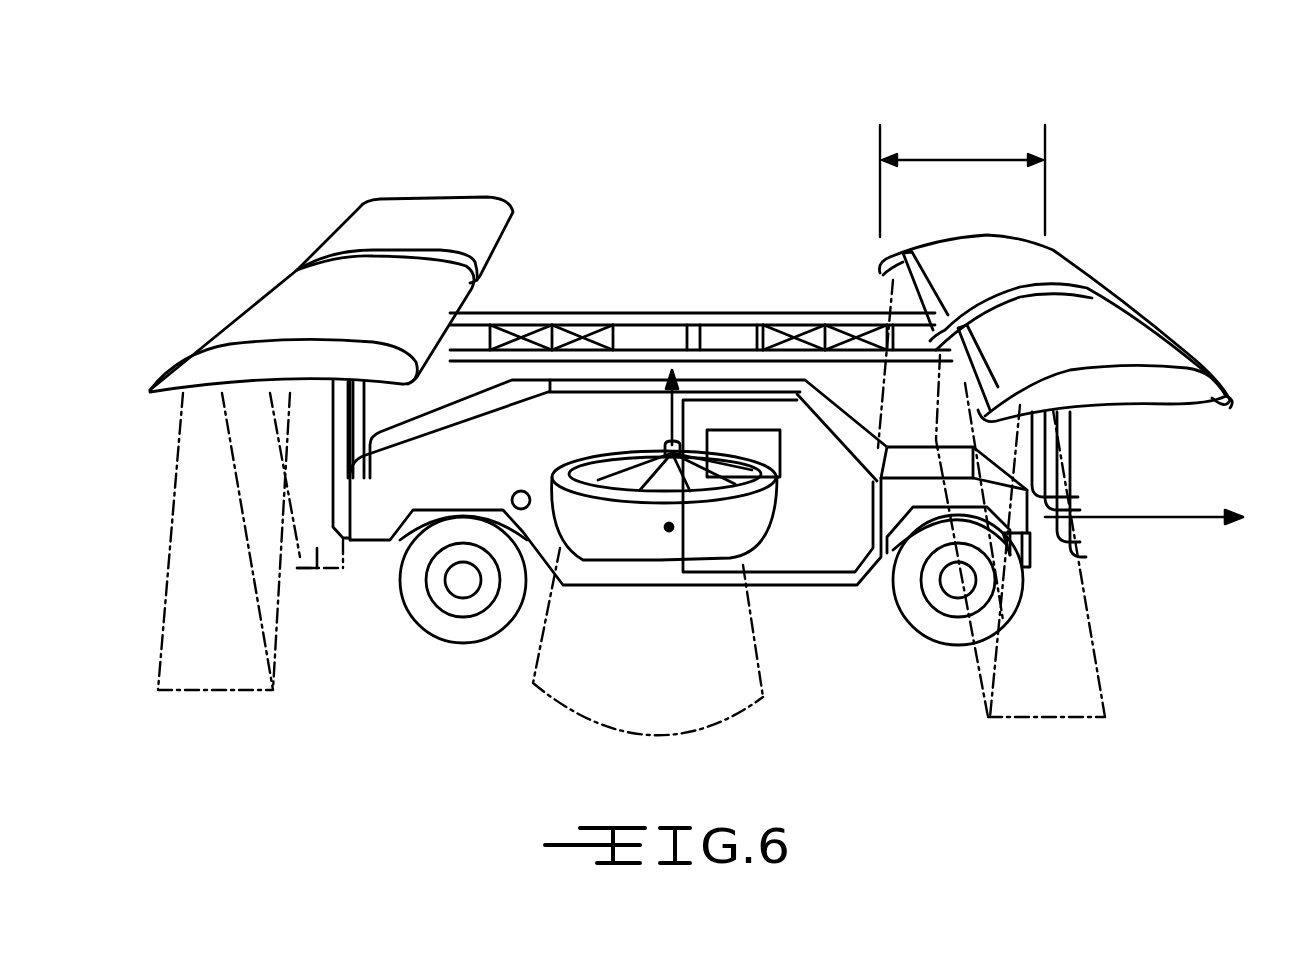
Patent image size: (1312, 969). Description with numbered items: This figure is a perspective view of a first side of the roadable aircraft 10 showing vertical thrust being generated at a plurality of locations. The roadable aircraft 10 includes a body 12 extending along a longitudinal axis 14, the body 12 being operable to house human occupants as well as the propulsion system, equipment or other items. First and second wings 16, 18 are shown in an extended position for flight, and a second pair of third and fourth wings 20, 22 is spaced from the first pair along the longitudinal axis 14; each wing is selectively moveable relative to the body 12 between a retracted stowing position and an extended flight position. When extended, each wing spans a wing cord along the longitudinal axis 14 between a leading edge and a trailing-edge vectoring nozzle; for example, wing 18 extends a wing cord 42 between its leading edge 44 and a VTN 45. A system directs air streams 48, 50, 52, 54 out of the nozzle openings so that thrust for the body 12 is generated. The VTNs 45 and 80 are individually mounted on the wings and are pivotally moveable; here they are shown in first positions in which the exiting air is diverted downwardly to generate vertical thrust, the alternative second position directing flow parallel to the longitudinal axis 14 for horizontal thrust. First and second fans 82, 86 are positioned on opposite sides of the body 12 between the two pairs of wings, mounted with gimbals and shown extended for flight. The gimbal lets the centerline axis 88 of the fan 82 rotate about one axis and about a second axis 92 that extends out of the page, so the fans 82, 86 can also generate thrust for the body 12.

The roadable aircraft 10 is at (678, 142).
The body 12 is at (473, 473).
The longitudinal axis 14 is at (1182, 523).
The first wing 16 is at (1223, 400).
The second wing 18 is at (1043, 256).
The third wing 20 is at (417, 317).
The fourth wing 22 is at (447, 238).
The wing cord 42 is at (1000, 160).
The leading edge 44 is at (1090, 281).
The wing trailing-edge vectoring nozzle (VTN) 45 is at (989, 378).
The air stream 48 is at (1070, 697).
The air stream 50 is at (950, 417).
The air stream 52 is at (207, 647).
The air stream 54 is at (317, 548).
The wing trailing-edge vectoring nozzle (VTN) 80 is at (931, 293).
The first fan 82 is at (727, 527).
The second fan 86 is at (735, 722).
The centerline axis 88 is at (672, 408).
The second axis 92 is at (669, 528).